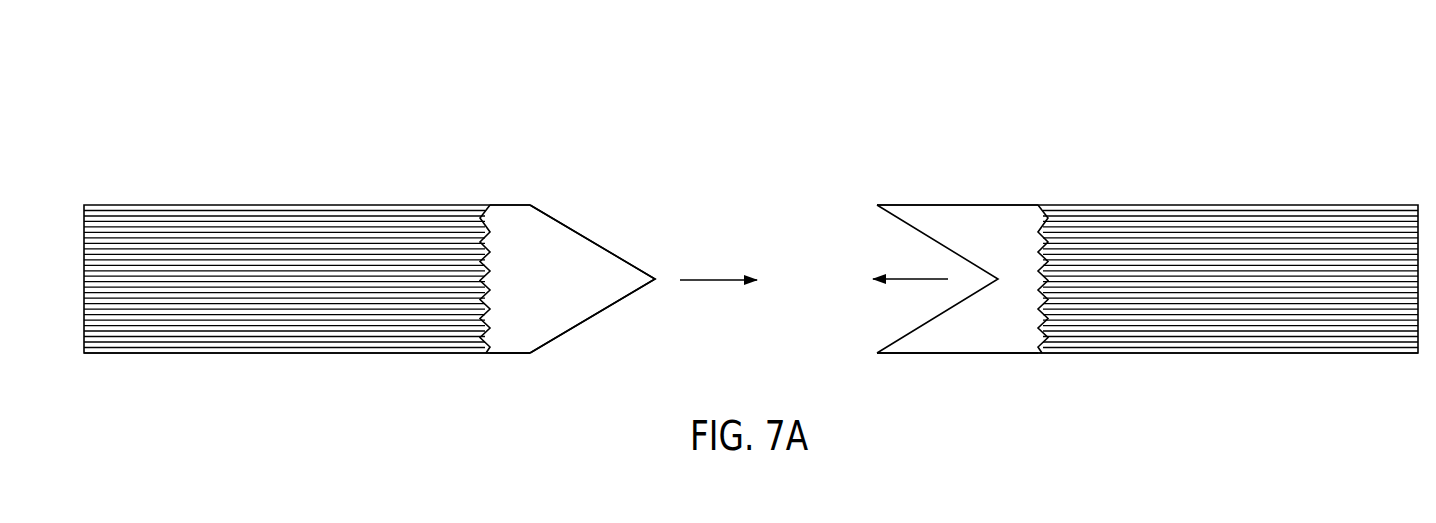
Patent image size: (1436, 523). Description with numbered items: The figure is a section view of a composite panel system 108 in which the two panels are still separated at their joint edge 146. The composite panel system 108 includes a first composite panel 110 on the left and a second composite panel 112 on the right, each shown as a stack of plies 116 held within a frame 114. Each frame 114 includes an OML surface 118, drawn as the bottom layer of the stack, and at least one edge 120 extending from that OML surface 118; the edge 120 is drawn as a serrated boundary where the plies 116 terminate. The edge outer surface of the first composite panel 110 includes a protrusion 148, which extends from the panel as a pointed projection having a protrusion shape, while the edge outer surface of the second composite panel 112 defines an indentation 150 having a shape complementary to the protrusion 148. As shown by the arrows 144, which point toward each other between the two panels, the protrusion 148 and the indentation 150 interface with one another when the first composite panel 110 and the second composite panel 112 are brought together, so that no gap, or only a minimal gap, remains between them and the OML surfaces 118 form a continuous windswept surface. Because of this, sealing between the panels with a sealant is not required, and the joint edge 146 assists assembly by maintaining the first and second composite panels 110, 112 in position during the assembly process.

The composite panel system 108 is at (398, 120).
The first composite panel 110 is at (333, 168).
The second composite panel 112 is at (1225, 170).
The frame 114 is at (510, 218).
The plies 116 is at (290, 240).
The OML surface 118 is at (232, 343).
The edge 120 is at (532, 250).
The arrows 144 is at (715, 280).
The joint edge 146 is at (650, 100).
The protrusion 148 is at (568, 255).
The indentation 150 is at (948, 245).